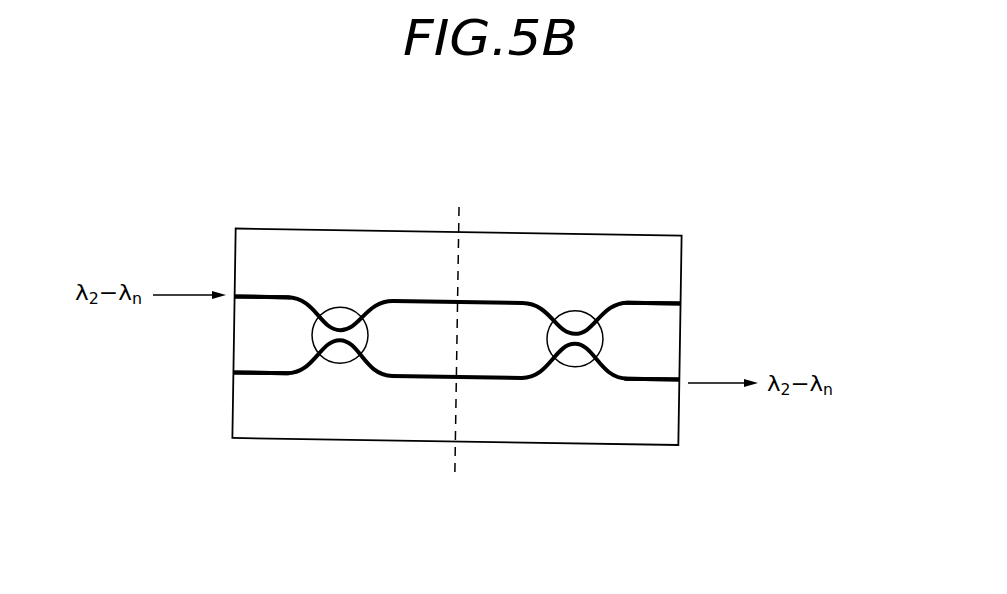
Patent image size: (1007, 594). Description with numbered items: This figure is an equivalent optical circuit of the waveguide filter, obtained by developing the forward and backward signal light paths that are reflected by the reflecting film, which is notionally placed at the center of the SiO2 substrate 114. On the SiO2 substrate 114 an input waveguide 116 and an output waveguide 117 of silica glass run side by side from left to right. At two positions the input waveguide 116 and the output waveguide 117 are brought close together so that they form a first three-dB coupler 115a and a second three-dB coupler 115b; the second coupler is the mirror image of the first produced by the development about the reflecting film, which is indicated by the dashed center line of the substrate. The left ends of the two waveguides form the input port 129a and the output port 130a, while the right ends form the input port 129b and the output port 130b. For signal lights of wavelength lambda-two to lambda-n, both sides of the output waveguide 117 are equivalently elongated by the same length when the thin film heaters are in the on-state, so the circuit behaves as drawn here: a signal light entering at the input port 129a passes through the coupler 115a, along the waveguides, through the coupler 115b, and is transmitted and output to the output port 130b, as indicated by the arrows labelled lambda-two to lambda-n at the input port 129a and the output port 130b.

The SiO2 substrate 114 is at (545, 255).
The 3 dB coupler 115a is at (337, 306).
The 3 dB coupler 115b is at (575, 366).
The input waveguide 116 is at (413, 298).
The output waveguide 117 is at (413, 379).
The input port 129a is at (233, 296).
The input port 129b is at (681, 305).
The output port 130a is at (234, 373).
The output port 130b is at (681, 382).